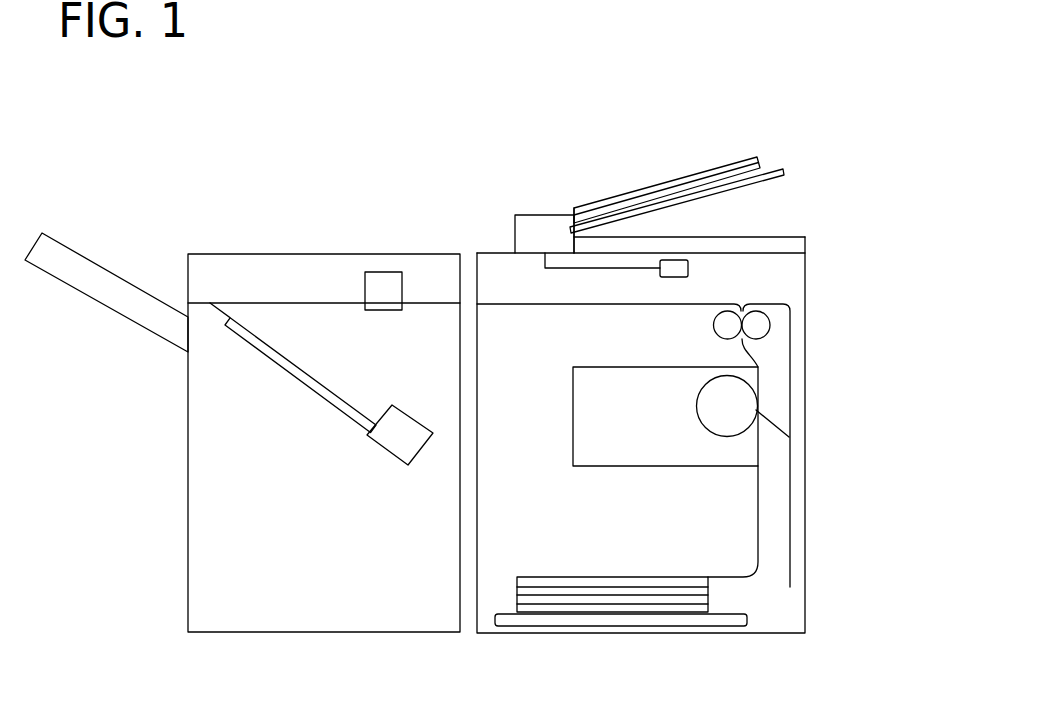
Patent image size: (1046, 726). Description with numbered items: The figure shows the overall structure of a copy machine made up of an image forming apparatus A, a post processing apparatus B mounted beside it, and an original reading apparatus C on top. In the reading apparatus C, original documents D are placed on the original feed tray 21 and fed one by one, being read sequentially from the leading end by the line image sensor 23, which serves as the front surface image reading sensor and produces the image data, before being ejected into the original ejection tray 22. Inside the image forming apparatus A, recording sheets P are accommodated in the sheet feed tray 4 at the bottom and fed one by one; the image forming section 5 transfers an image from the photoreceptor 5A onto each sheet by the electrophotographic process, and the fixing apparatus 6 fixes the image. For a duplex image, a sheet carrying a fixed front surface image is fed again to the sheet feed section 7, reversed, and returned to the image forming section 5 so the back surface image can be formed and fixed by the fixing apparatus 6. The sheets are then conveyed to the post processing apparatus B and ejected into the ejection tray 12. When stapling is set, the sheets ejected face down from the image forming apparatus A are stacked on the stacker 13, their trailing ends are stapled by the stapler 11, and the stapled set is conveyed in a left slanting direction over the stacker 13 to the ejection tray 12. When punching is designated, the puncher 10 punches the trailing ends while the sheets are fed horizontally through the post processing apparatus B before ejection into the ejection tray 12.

The image forming apparatus A is at (820, 410).
The post processing apparatus B is at (334, 235).
The original reading apparatus C is at (598, 178).
The original documents D is at (714, 168).
The sheet feed tray 4 is at (713, 628).
The image forming section 5 is at (573, 418).
The photoreceptor 5A is at (697, 406).
The fixing apparatus 6 is at (713, 325).
The sheet feed section 7 is at (790, 450).
The recording sheets P is at (619, 577).
The puncher 10 is at (383, 310).
The stapler 11 is at (386, 457).
The ejection tray 12 is at (88, 302).
The stacker 13 is at (275, 368).
The original feed tray 21 is at (748, 178).
The original ejection tray 22 is at (777, 237).
The line image sensor 23 is at (688, 268).